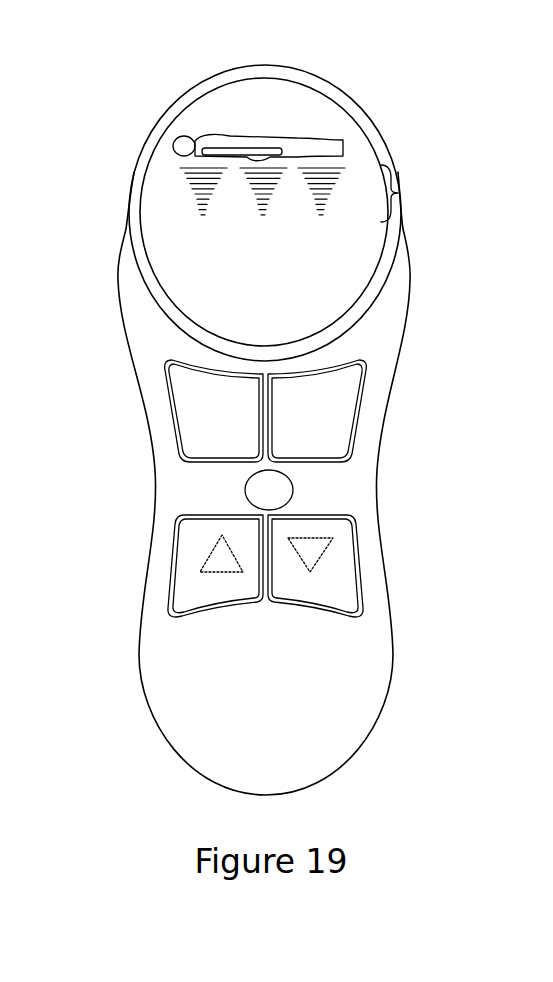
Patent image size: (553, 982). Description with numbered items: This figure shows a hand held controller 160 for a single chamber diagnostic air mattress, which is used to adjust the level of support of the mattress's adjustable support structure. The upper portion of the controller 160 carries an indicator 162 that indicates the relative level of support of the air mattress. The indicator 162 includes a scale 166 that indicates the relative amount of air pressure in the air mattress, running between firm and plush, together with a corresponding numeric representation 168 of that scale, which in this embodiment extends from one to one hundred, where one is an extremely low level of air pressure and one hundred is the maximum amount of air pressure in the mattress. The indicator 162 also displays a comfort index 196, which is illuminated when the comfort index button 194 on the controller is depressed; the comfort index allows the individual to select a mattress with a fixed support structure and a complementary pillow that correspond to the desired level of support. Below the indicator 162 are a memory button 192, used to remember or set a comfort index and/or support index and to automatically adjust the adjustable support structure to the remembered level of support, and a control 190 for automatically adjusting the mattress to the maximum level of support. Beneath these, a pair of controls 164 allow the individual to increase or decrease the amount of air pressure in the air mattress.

The controller 160 is at (368, 745).
The indicator 162 is at (357, 127).
The controls 164 is at (257, 533).
The scale 166 is at (392, 192).
The numeric representation 168 is at (302, 257).
The control for automatically adjusting the mattress 190 is at (358, 418).
The memory button 192 is at (168, 397).
The comfort index button 194 is at (256, 478).
The comfort index 196 is at (242, 325).